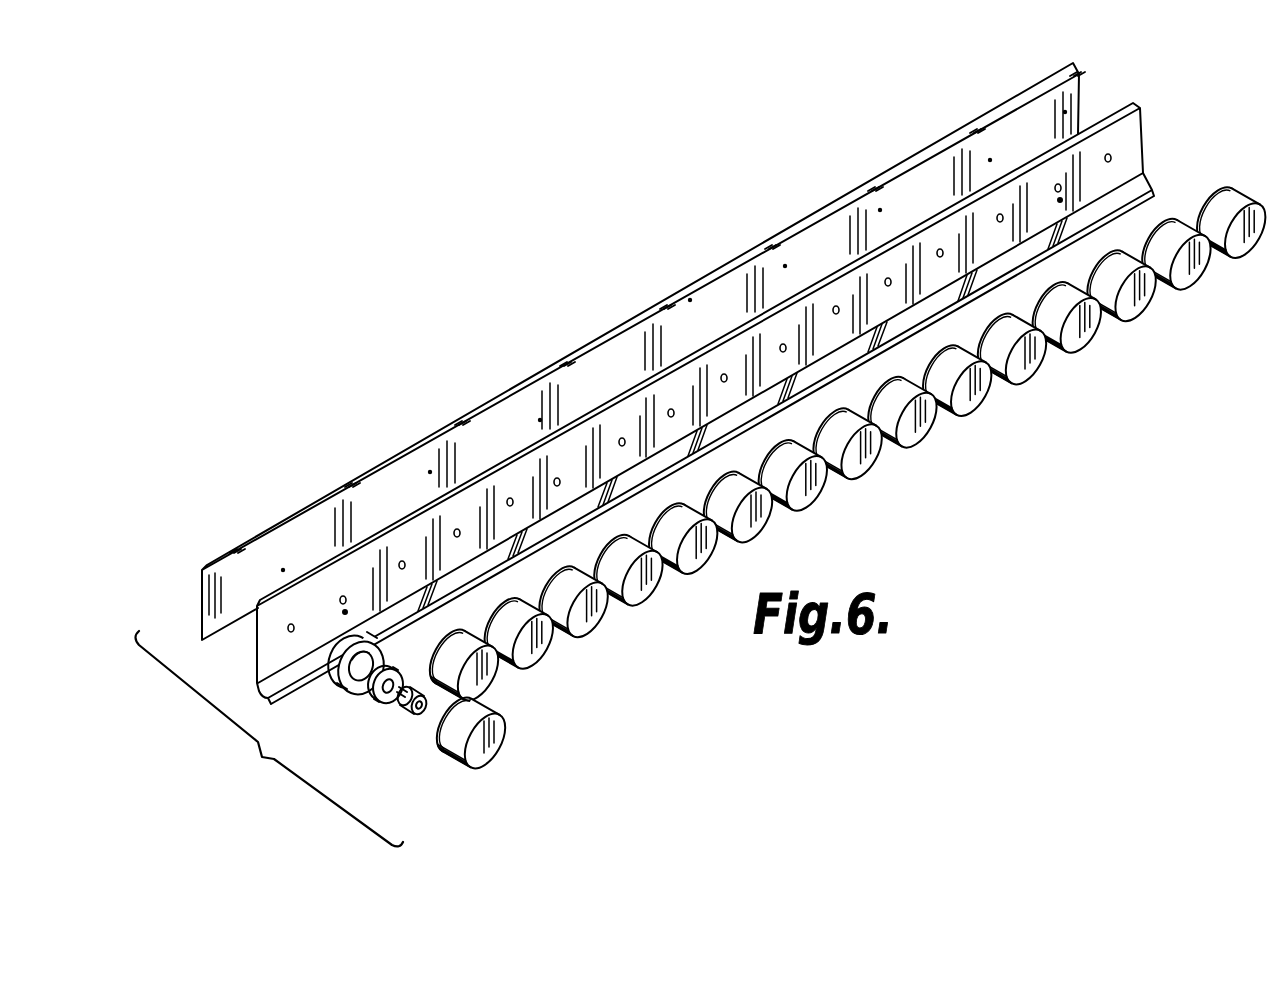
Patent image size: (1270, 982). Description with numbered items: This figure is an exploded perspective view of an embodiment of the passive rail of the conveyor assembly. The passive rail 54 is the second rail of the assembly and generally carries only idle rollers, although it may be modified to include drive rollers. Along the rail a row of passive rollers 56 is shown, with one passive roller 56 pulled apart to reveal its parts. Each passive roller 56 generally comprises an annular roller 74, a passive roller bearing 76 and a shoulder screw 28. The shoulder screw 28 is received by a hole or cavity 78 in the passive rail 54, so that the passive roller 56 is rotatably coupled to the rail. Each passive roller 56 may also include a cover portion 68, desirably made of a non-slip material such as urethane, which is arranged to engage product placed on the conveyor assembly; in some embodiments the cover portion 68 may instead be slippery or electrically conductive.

The second rail 54 is at (676, 403).
The passive roller 56 is at (507, 752).
The cover portion 68 is at (499, 731).
The annular roller 74 is at (333, 690).
The passive roller bearing 76 is at (377, 703).
The shoulder screw 28 is at (412, 715).
The hole or cavity 78 is at (288, 631).